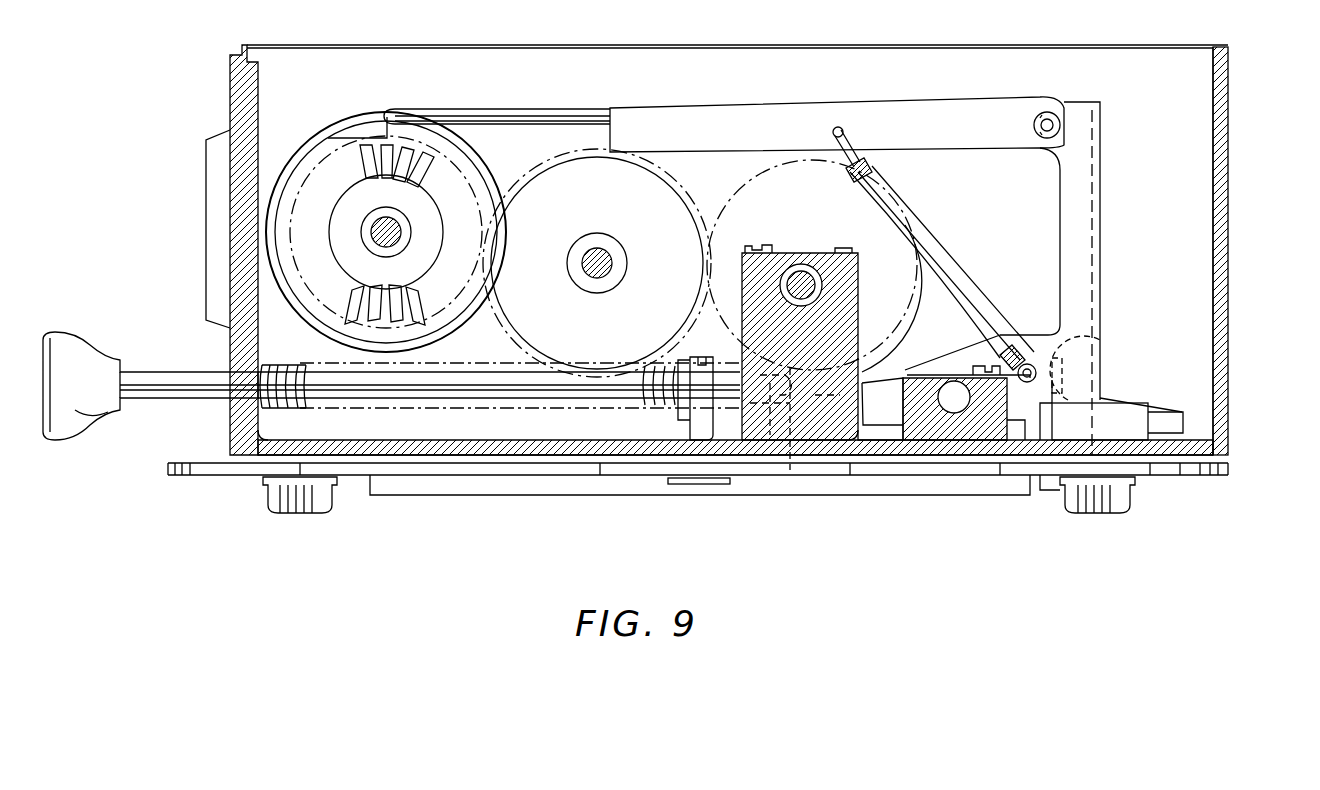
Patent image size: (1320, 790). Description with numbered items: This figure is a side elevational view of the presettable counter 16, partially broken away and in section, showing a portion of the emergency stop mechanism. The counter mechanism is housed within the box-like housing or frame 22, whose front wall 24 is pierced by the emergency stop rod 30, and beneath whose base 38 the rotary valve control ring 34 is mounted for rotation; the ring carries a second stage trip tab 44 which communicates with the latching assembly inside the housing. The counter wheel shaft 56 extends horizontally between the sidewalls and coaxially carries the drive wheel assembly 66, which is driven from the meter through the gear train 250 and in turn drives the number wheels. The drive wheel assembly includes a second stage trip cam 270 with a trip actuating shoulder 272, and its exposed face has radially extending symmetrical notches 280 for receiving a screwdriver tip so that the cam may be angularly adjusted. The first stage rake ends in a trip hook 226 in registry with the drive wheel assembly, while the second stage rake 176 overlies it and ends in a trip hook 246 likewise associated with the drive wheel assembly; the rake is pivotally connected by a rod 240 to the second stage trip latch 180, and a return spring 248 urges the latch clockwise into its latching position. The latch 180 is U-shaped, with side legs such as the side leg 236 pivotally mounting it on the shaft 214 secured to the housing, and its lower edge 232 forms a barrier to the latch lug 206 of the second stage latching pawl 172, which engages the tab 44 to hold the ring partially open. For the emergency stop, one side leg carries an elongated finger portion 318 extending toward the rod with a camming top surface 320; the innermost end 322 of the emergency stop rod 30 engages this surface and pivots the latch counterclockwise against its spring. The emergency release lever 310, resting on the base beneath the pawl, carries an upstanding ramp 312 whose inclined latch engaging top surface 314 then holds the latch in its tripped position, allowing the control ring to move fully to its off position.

The presettable counter 16 is at (1232, 170).
The housing or frame 22 is at (1228, 242).
The front wall 24 is at (230, 115).
The emergency stop rod 30 is at (150, 368).
The rotary valve control ring 34 is at (196, 485).
The base 38 is at (540, 460).
The second stage trip tab 44 is at (1035, 458).
The counter wheel shaft 56 is at (396, 232).
The drive wheel assembly 66 is at (327, 216).
The second stage latching pawl 172 is at (1182, 412).
The second stage rake 176 is at (636, 108).
The second stage trip latch 180 is at (1102, 164).
The latch lug 206 is at (1104, 410).
The shaft 214 is at (935, 430).
The trip hook 226 is at (510, 126).
The lower edge 232 is at (1082, 380).
The side leg 236 is at (1030, 363).
The rod 240 is at (1055, 122).
The trip hook 246 is at (428, 115).
The return spring 248 is at (878, 165).
The gear train 250 is at (665, 180).
The second stage trip cam 270 is at (280, 220).
The trip actuating shoulder 272 is at (382, 118).
The radially extending symmetrical notches 280 is at (405, 286).
The emergency release lever 310 is at (1195, 435).
The upstanding ramp 312 is at (1068, 395).
The inclined latch engaging top surface 314 is at (1094, 332).
The elongated finger portion 318 is at (855, 440).
The camming top surface 320 is at (880, 380).
The innermost end 322 is at (790, 470).